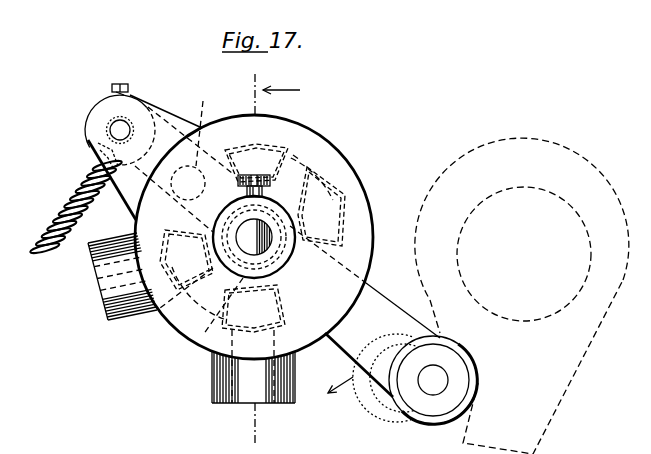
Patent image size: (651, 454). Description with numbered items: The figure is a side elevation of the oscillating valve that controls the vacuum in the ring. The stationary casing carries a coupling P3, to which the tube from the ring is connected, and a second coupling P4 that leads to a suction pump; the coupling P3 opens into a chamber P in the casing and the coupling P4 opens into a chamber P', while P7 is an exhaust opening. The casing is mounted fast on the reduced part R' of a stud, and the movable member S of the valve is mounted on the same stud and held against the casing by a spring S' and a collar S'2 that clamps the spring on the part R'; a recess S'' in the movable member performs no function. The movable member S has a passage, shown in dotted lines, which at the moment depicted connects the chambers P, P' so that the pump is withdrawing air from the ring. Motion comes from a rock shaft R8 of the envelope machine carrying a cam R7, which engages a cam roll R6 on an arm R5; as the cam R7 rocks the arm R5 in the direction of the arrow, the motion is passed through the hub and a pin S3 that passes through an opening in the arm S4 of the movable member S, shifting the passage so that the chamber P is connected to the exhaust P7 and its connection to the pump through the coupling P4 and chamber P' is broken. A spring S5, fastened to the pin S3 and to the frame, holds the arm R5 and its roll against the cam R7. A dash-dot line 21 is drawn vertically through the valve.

The section line 21 is at (241, 259).
The movable member S is at (260, 259).
The spring S' is at (332, 148).
The recess S'' is at (274, 240).
The collar S'2 is at (266, 241).
The pin S3 is at (118, 131).
The arm S4 is at (160, 153).
The spring S5 is at (53, 266).
The chamber P is at (177, 283).
The chamber P' is at (235, 324).
The coupling P3 is at (108, 303).
The coupling P4 is at (213, 384).
The exhaust opening P7 is at (189, 142).
The reduced part of stud R' is at (254, 237).
The arm R5 is at (382, 340).
The cam roll R6 is at (427, 424).
The cam R7 is at (557, 418).
The rock shaft R8 is at (524, 254).